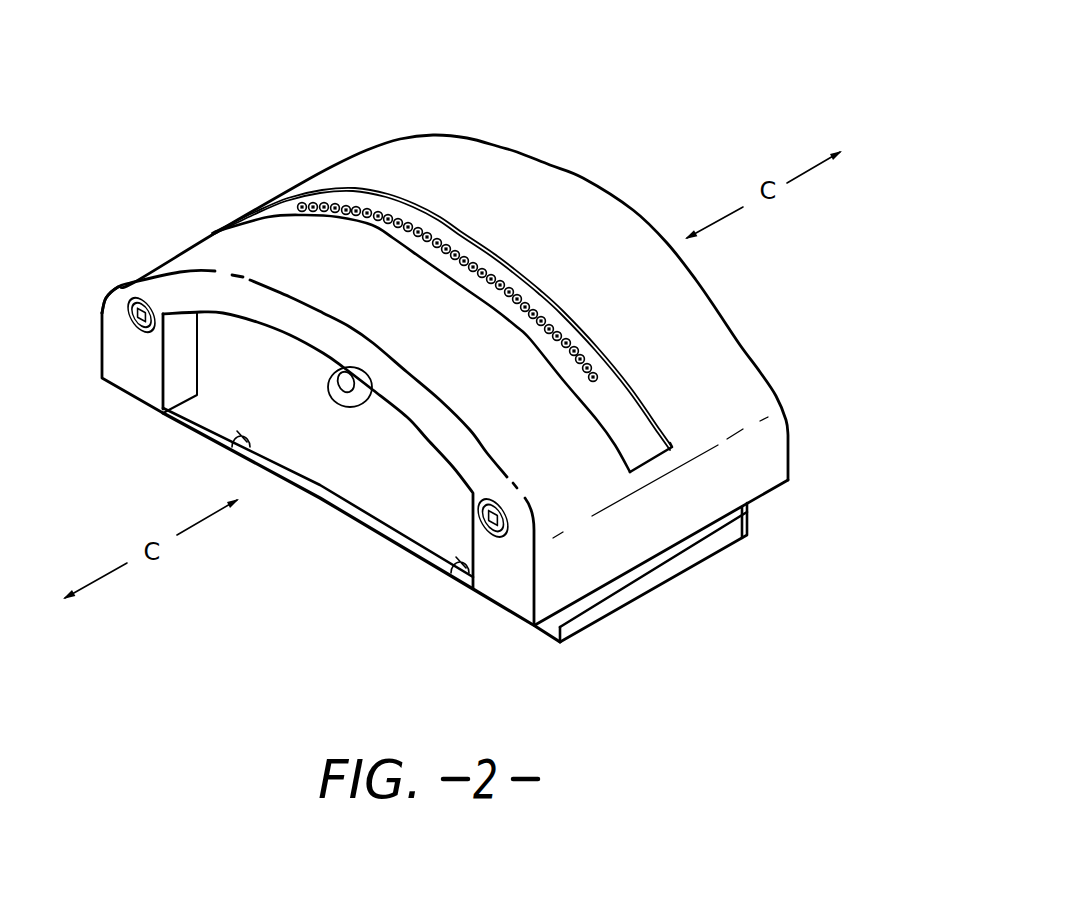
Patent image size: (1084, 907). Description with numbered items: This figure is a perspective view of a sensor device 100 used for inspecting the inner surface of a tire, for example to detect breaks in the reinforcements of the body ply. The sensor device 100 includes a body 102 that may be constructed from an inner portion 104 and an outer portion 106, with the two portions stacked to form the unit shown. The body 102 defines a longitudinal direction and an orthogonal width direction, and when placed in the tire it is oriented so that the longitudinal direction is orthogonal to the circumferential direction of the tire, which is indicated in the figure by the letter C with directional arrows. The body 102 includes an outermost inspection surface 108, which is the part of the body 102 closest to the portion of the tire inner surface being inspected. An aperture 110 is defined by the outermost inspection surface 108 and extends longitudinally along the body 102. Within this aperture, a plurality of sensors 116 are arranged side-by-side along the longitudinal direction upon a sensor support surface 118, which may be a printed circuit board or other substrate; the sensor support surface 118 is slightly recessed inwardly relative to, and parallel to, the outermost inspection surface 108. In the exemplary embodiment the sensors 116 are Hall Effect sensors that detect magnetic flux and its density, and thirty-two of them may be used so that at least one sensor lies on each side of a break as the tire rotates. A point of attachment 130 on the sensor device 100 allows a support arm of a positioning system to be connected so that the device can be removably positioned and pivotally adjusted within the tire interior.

The sensor device 100 is at (674, 112).
The body 102 is at (345, 470).
The inner portion 104 is at (417, 515).
The outer portion 106 is at (503, 592).
The outermost inspection surface 108 is at (436, 157).
The aperture 110 is at (278, 218).
The sensors 116 is at (346, 208).
The sensor support surface 118 is at (627, 425).
The point of attachment 130 is at (328, 378).